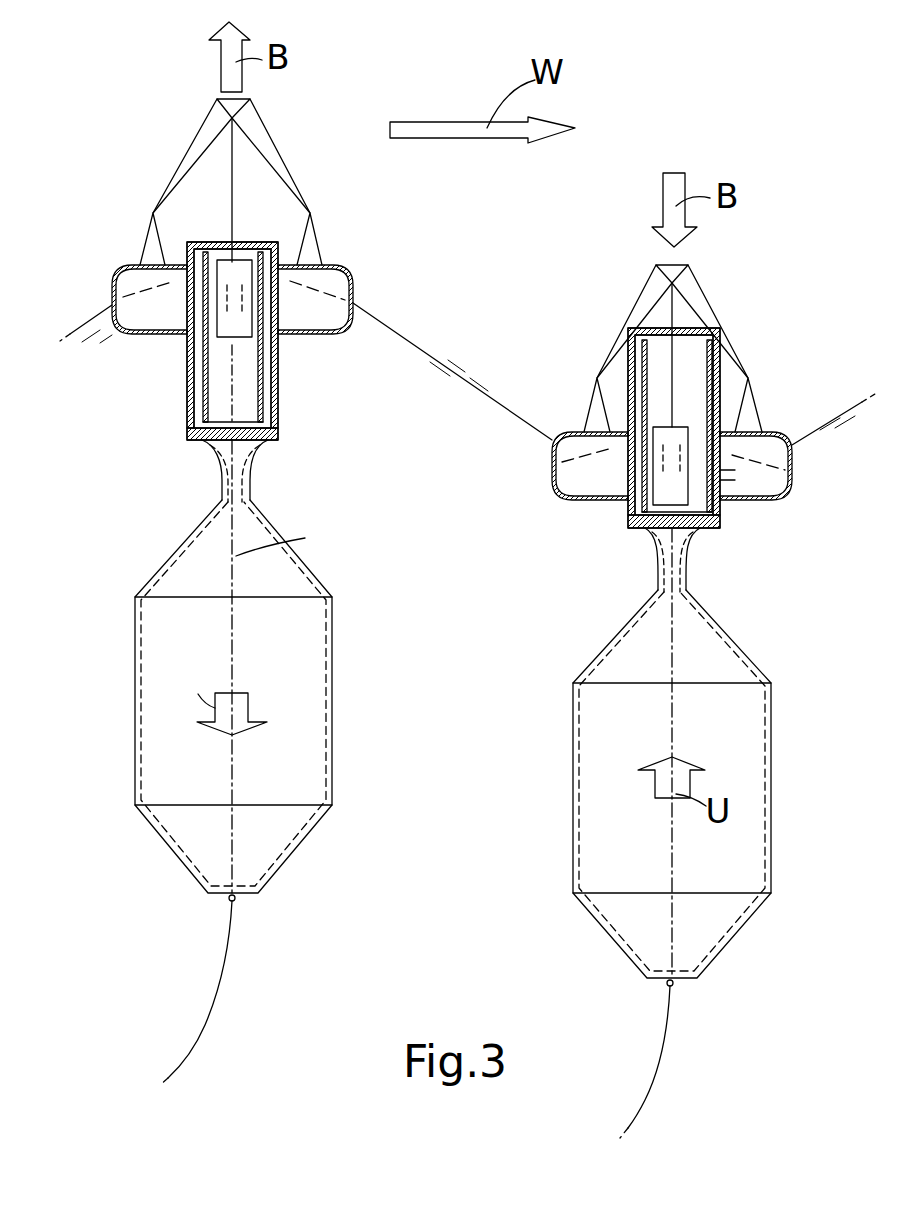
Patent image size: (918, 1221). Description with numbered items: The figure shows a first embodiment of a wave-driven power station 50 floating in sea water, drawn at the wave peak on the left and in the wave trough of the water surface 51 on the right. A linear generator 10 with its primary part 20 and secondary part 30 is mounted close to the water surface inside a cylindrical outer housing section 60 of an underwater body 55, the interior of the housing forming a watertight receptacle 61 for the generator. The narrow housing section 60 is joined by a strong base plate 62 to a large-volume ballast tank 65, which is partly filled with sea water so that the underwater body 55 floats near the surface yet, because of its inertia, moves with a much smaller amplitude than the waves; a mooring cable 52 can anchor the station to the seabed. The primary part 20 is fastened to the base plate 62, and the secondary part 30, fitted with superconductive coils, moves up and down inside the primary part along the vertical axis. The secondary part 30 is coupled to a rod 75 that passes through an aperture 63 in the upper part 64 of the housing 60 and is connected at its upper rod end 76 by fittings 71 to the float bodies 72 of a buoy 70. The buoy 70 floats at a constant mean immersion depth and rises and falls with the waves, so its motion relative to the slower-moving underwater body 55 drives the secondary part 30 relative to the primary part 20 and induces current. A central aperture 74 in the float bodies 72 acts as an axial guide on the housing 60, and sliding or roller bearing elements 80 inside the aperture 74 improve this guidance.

The linear generator 10 is at (180, 402).
The primary part 20 is at (200, 375).
The secondary part 30 is at (225, 262).
The wave-driven power station 50 is at (345, 136).
The water surface 51 is at (462, 371).
The mooring cable 52 is at (218, 1013).
The underwater body 55 is at (160, 529).
The cylindrical outer housing section 60 is at (190, 352).
The receptacle 61 is at (272, 373).
The base plate 62 is at (218, 452).
The aperture 63 is at (670, 328).
The upper part 64 is at (690, 328).
The ballast tank 65 is at (312, 654).
The buoy 70 is at (155, 150).
The fittings 71 is at (205, 134).
The float bodies 72 is at (133, 277).
The central aperture 74 is at (727, 486).
The rod 75 is at (235, 178).
The upper rod end 76 is at (240, 117).
The sliding or roller bearing elements 80 is at (735, 446).